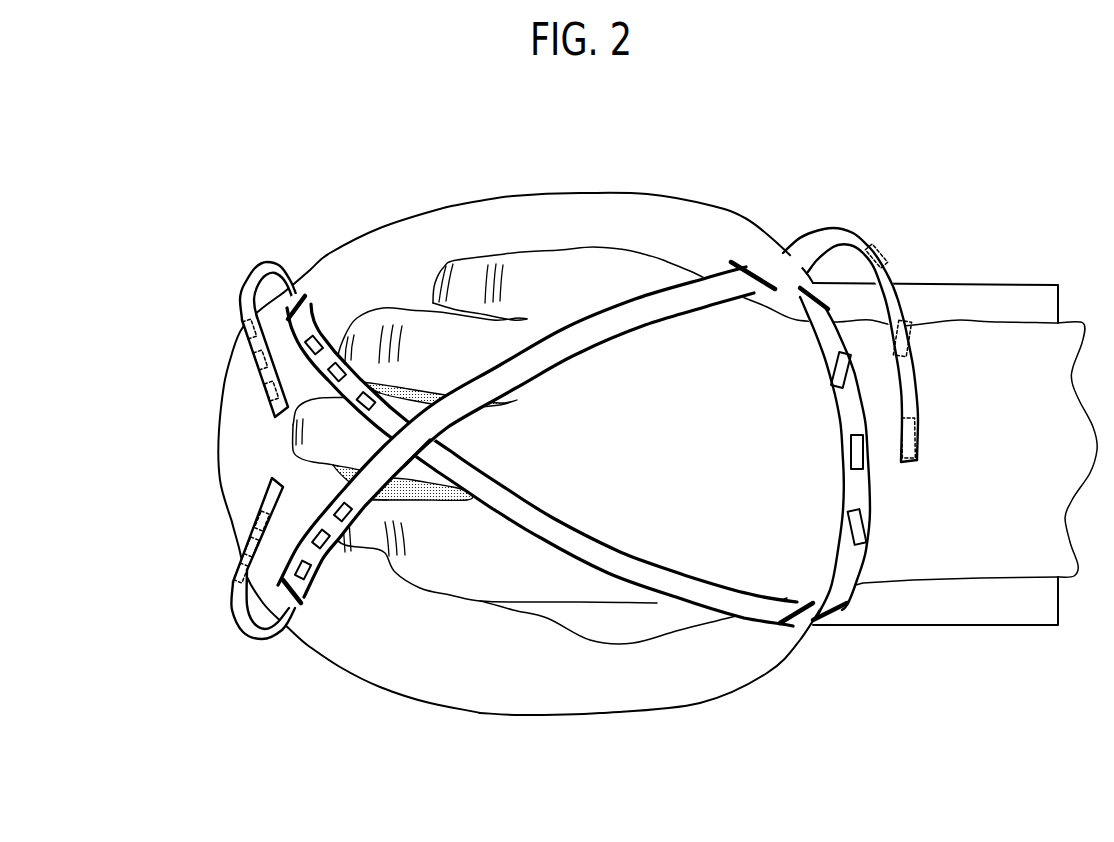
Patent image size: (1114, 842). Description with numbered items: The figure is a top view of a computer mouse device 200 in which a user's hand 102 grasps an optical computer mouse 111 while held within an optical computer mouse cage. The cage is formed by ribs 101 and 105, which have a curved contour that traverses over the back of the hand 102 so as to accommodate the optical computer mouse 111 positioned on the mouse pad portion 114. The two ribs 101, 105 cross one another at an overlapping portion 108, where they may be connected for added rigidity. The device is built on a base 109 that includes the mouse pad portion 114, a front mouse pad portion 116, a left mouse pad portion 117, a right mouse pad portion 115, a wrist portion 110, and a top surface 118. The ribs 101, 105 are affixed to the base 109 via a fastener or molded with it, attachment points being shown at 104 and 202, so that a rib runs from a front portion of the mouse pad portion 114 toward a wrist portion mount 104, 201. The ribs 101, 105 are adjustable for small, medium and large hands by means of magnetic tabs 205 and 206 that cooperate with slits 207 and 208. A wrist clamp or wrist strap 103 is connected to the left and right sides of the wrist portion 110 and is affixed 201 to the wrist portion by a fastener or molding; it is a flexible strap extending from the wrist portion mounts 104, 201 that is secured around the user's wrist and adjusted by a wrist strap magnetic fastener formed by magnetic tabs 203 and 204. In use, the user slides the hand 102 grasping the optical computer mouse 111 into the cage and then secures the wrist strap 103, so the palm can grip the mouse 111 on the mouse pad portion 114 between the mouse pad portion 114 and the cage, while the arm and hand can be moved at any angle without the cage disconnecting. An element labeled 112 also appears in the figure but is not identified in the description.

The computer mouse device 200 is at (163, 224).
The rib 101 is at (590, 333).
The user's hand 102 is at (703, 547).
The wrist clamp or wrist strap 103 is at (857, 555).
The wrist portion mount 104 is at (833, 617).
The rib 105 is at (533, 520).
The overlapping portion 108 is at (420, 441).
The base 109 is at (378, 252).
The wrist portion 110 is at (972, 317).
The optical computer mouse 111 is at (430, 500).
The second strap lower anchor 112 is at (787, 623).
The mouse pad portion 114 is at (527, 620).
The right mouse pad portion 115 is at (507, 196).
The front mouse pad portion 116 is at (218, 428).
The left mouse pad portion 117 is at (510, 713).
The top surface 118 is at (457, 667).
The wrist portion mount 201 is at (805, 277).
The rib attachment 202 is at (750, 270).
The magnetic tab 203 is at (920, 430).
The magnetic tab 204 is at (833, 373).
The magnetic tab 205 is at (243, 348).
The magnetic tab 206 is at (312, 340).
The slit 207 is at (295, 298).
The slit 208 is at (292, 604).